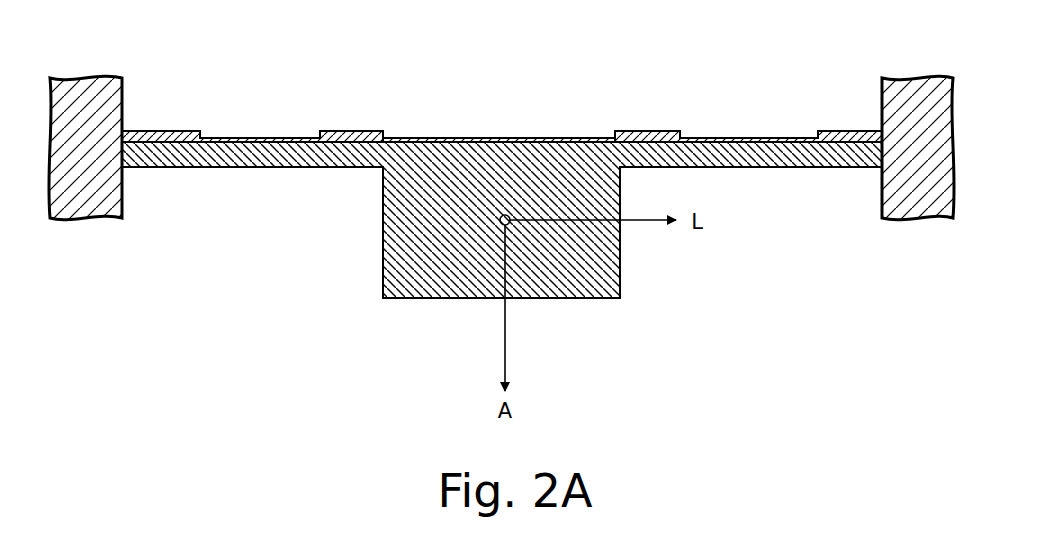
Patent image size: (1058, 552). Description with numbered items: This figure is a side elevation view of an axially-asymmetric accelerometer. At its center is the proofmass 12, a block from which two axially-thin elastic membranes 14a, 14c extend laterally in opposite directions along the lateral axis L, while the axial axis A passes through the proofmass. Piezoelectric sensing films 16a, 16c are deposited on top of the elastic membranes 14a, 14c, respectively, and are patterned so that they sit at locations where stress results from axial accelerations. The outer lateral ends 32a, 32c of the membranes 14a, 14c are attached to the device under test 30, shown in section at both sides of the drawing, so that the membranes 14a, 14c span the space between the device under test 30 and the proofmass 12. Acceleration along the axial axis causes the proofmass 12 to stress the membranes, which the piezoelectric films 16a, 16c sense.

The proofmass 12 is at (620, 279).
The axially-thin elastic membrane 14a is at (195, 168).
The axially-thin elastic membrane 14c is at (782, 167).
The piezoelectric sensing film 16a is at (251, 138).
The piezoelectric sensing film 16c is at (737, 138).
The device under test 30 is at (501, 147).
The lateral end 32a is at (137, 103).
The lateral end 32c is at (869, 174).